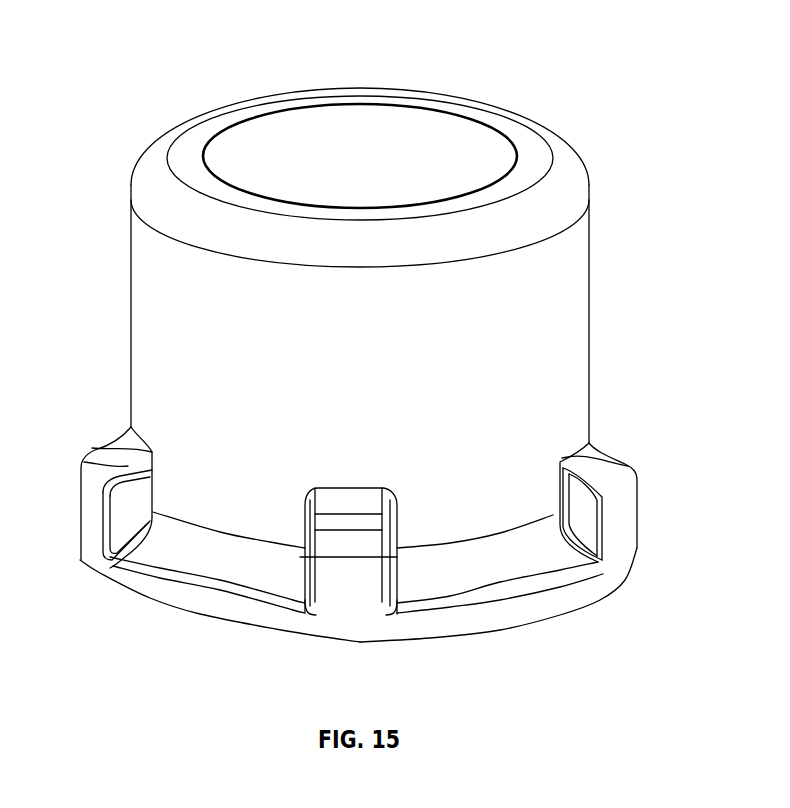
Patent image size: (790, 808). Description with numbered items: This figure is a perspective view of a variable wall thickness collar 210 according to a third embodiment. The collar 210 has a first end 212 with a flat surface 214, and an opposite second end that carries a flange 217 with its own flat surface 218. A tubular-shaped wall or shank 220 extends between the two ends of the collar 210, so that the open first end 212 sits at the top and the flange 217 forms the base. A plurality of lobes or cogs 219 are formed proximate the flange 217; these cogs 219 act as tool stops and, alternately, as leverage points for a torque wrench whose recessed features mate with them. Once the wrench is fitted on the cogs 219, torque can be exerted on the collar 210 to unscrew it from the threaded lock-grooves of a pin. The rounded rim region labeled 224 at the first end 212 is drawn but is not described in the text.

The collar 210 is at (157, 43).
The first end 212 is at (384, 72).
The flat surface 214 is at (510, 128).
The rounded top edge 224 is at (565, 150).
The tubular-shaped wall or shank 220 is at (606, 306).
The lobes or cogs 219 is at (95, 470).
The flange 217 is at (160, 590).
The flat surface 218 is at (540, 618).